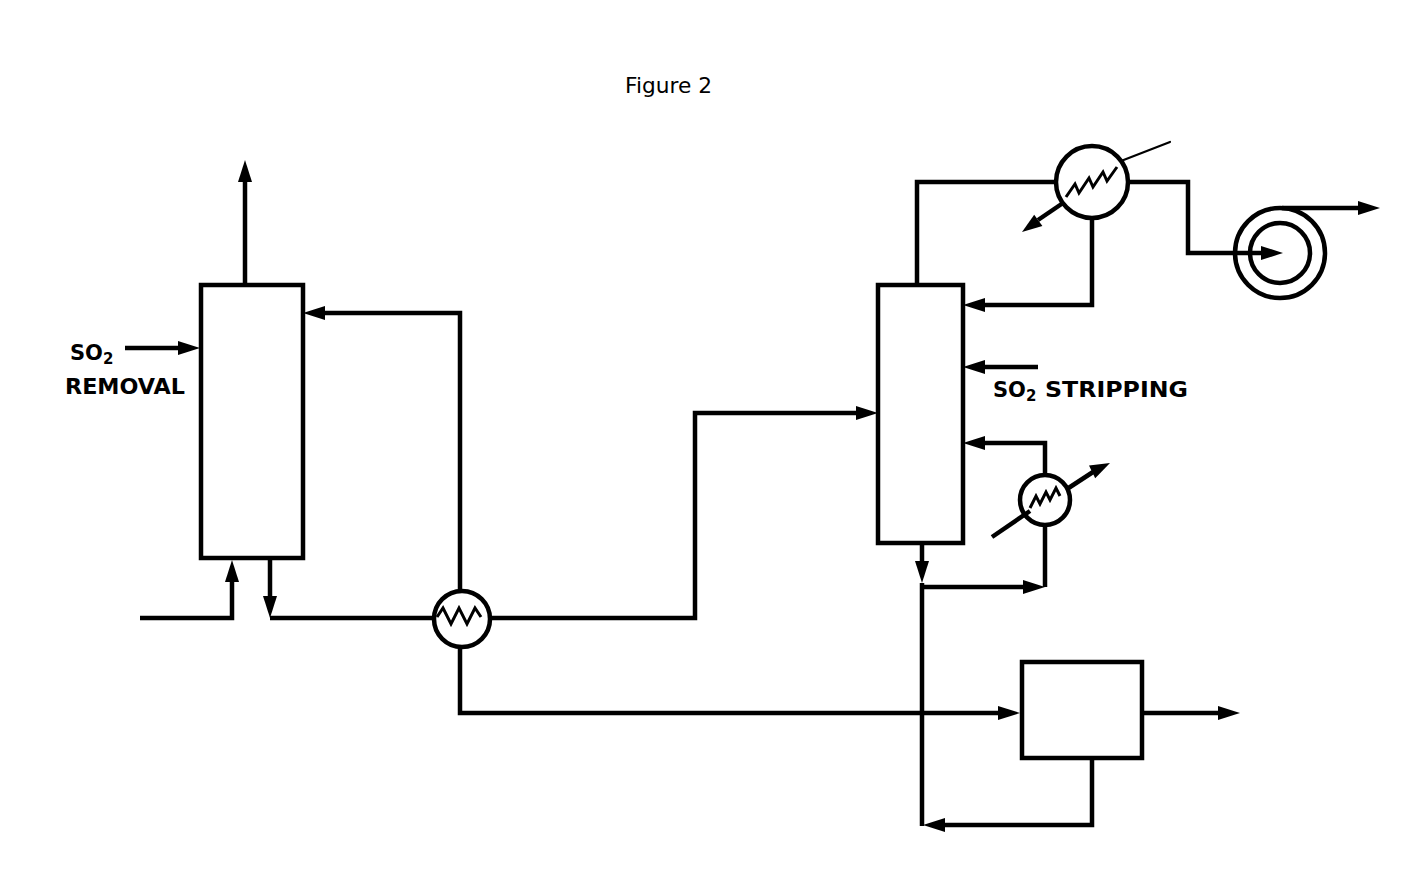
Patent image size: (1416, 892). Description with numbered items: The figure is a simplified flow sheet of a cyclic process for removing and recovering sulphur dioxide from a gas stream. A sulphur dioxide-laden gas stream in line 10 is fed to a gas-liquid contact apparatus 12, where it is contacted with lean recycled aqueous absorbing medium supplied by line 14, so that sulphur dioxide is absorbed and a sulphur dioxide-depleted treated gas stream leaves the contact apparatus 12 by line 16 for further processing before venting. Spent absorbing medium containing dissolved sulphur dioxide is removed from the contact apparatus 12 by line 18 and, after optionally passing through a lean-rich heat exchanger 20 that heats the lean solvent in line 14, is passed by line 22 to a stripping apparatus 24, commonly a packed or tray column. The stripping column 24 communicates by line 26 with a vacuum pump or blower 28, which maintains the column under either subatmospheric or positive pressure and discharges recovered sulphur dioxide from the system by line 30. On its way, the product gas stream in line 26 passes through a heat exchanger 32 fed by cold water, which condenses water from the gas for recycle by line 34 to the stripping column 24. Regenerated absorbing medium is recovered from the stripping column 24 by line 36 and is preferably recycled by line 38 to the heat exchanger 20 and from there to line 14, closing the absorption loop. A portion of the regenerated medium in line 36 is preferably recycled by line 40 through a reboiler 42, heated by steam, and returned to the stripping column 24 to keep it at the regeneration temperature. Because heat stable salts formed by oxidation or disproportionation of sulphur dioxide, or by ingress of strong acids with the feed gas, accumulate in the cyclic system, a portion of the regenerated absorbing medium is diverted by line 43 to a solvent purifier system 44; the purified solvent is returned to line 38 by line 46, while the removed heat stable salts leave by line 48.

The line 10 is at (207, 619).
The gas-liquid contact apparatus 12 is at (201, 530).
The line 14 is at (375, 313).
The line 16 is at (245, 226).
The line 18 is at (352, 619).
The lean-rich heat exchanger 20 is at (482, 640).
The line 22 is at (697, 585).
The stripping apparatus 24 is at (878, 342).
The line 26 is at (917, 243).
The vacuum pump or blower 28 is at (1313, 284).
The line 30 is at (1342, 210).
The heat exchanger 32 is at (1100, 218).
The line 34 is at (1073, 307).
The line 36 is at (918, 562).
The line 38 is at (775, 713).
The line 40 is at (1047, 540).
The reboiler 42 is at (1068, 510).
The line 43 is at (980, 680).
The solvent purifier system 44 is at (1100, 662).
The line 46 is at (1003, 825).
The line 48 is at (1160, 715).